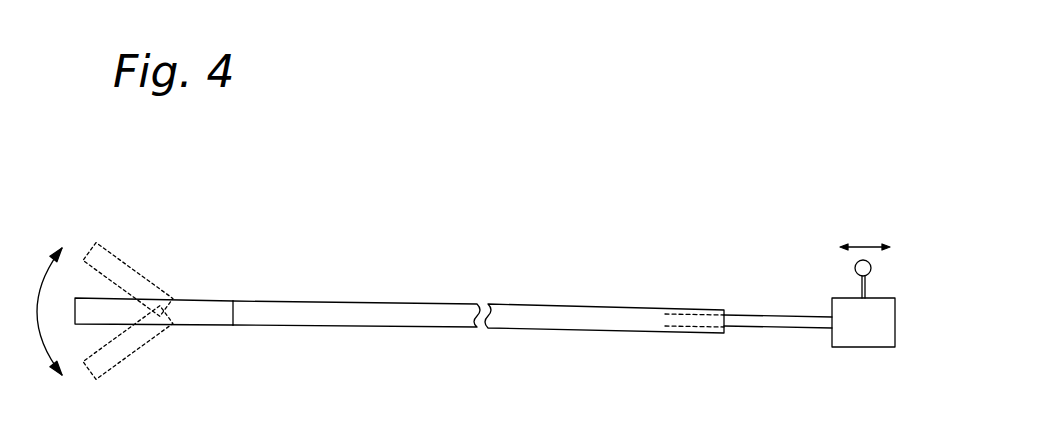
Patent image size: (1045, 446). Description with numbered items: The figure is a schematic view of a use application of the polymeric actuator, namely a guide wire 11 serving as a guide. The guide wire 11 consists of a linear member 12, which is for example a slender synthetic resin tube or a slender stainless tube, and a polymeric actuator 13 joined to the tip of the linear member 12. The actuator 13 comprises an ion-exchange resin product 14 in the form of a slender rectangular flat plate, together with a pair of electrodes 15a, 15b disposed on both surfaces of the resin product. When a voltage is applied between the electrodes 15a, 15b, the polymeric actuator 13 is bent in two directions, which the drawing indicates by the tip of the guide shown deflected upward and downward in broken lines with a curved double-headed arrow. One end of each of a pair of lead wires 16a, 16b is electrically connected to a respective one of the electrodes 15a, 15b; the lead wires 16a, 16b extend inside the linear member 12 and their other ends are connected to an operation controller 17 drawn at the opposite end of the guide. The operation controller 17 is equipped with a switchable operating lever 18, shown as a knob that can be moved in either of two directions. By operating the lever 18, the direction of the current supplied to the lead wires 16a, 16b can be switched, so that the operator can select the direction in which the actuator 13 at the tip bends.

The guide wire 11 is at (435, 300).
The linear member 12 is at (345, 302).
The polymeric actuator 13 is at (197, 295).
The ion-exchange resin product 14 is at (108, 305).
The electrode 15a is at (147, 298).
The electrode 15b is at (145, 325).
The lead wire 16a is at (760, 315).
The lead wire 16b is at (765, 330).
The operation controller 17 is at (858, 348).
The operating lever 18 is at (852, 270).